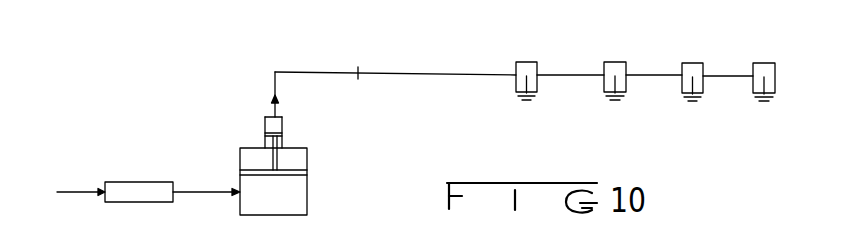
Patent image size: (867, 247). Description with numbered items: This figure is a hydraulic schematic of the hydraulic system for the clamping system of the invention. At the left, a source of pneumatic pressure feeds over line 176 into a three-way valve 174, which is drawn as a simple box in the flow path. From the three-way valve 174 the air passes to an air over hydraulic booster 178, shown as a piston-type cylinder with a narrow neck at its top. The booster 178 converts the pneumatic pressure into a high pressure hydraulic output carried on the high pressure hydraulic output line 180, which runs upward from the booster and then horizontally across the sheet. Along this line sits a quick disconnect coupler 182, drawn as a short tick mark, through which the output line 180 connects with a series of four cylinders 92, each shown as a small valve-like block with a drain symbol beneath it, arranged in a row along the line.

The cylinders 92 is at (527, 62).
The three-way valve 174 is at (143, 182).
The line 176 is at (68, 191).
The air over hydraulic booster 178 is at (307, 190).
The high pressure hydraulic output line 180 is at (297, 71).
The quick disconnect coupler 182 is at (361, 66).